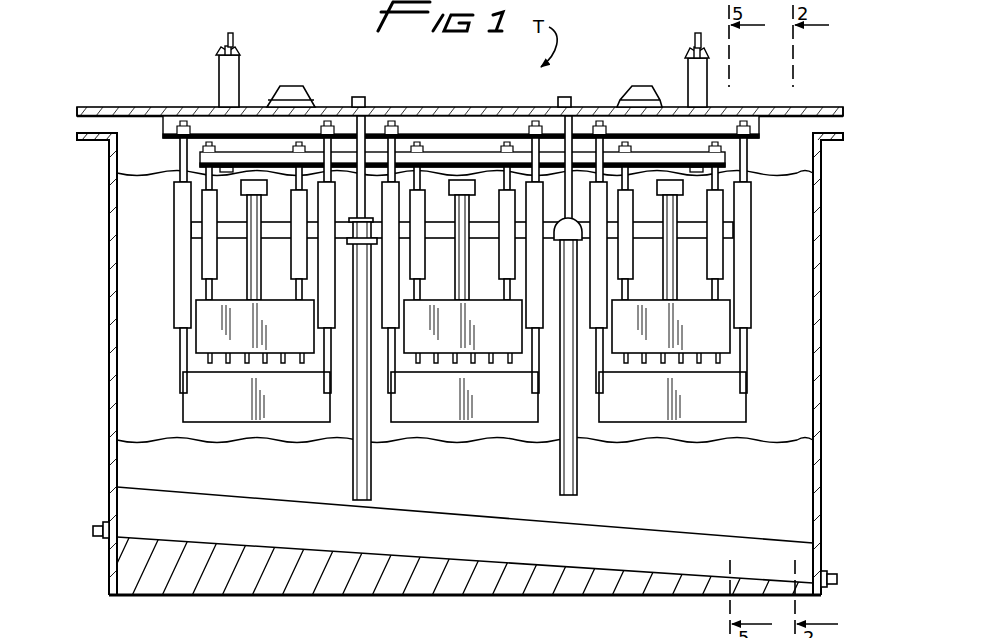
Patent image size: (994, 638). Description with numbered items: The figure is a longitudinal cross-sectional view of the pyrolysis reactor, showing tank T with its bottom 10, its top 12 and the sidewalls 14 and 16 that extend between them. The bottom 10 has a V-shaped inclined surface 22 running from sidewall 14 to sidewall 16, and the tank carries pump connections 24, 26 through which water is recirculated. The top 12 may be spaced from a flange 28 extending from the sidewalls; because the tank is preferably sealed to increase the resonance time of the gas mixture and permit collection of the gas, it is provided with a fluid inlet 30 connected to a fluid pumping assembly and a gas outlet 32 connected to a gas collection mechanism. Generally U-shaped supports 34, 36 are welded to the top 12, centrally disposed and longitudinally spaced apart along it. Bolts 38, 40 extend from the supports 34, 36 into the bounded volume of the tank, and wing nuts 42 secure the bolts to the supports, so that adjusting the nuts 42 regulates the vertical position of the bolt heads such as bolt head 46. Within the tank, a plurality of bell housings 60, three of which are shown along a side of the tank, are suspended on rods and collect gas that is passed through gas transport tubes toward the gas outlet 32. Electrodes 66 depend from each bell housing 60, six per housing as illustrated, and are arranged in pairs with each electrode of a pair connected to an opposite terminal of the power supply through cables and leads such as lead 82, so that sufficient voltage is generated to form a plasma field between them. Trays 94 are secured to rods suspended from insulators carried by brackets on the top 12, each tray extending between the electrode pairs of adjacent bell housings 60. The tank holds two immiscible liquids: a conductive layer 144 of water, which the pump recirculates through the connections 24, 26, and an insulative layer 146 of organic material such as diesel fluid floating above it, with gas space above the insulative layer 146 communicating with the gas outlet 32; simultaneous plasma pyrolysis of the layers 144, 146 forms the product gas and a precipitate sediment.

The bottom 10 is at (474, 385).
The top 12 is at (437, 107).
The sidewall 14 is at (109, 345).
The sidewall 16 is at (821, 310).
The V-shaped inclined surface 22 is at (648, 547).
The pump connection 24 is at (97, 524).
The pump connection 26 is at (838, 579).
The flange 28 is at (78, 142).
The fluid inlet 30 is at (77, 126).
The gas outlet 32 is at (841, 123).
The support 34 is at (240, 74).
The support 36 is at (623, 88).
The bolt 38 is at (231, 33).
The bolt 40 is at (694, 33).
The wing nut 42 is at (238, 50).
The bolt head 46 is at (695, 153).
The bell housing 60 is at (307, 331).
The electrode 66 is at (247, 365).
The lead 82 is at (477, 581).
The tray 94 is at (252, 417).
The conductive layer 144 is at (764, 462).
The insulative layer 146 is at (773, 190).